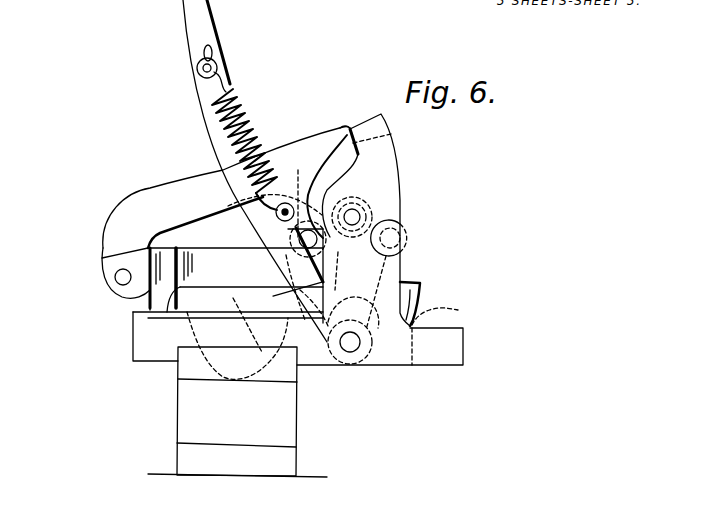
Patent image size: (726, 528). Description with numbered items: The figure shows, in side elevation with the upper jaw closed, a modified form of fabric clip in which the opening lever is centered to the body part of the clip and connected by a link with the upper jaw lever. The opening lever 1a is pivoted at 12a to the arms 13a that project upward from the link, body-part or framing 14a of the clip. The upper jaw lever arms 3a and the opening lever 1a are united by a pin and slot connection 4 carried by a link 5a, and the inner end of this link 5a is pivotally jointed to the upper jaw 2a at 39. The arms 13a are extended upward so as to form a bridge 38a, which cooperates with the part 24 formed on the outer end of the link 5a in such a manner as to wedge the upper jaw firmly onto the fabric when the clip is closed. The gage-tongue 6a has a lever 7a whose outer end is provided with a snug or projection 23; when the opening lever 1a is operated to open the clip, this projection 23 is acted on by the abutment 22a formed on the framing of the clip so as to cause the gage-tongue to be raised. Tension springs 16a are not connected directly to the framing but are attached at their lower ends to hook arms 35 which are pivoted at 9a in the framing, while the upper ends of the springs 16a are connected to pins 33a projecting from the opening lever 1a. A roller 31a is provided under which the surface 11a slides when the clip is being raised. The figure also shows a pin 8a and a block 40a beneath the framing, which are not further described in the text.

The opening lever 1a is at (197, 40).
The upper jaw 2a is at (147, 282).
The upper jaw lever arms 3a is at (235, 276).
The pin and slot connection 4 is at (310, 232).
The link 5a is at (230, 193).
The gage-tongue 6a is at (193, 314).
The lever of the gage-tongue 7a is at (287, 287).
The pin 8a is at (398, 240).
The pivot of hook arms 9a is at (346, 350).
The surface 11a is at (343, 308).
The pivot of opening lever 12a is at (360, 215).
The arms 13a is at (368, 204).
The framing 14a is at (298, 338).
The tension springs 16a is at (257, 129).
The abutment 22a is at (448, 313).
The snug or projection 23 is at (422, 286).
The part on outer end of link 24 is at (348, 124).
The roller 31a is at (362, 208).
The pins 33a is at (217, 63).
The hook arms 35 is at (303, 268).
The bridge 38a is at (365, 134).
The pivot joint of link to upper jaw 39 is at (115, 277).
The block 40a is at (301, 398).